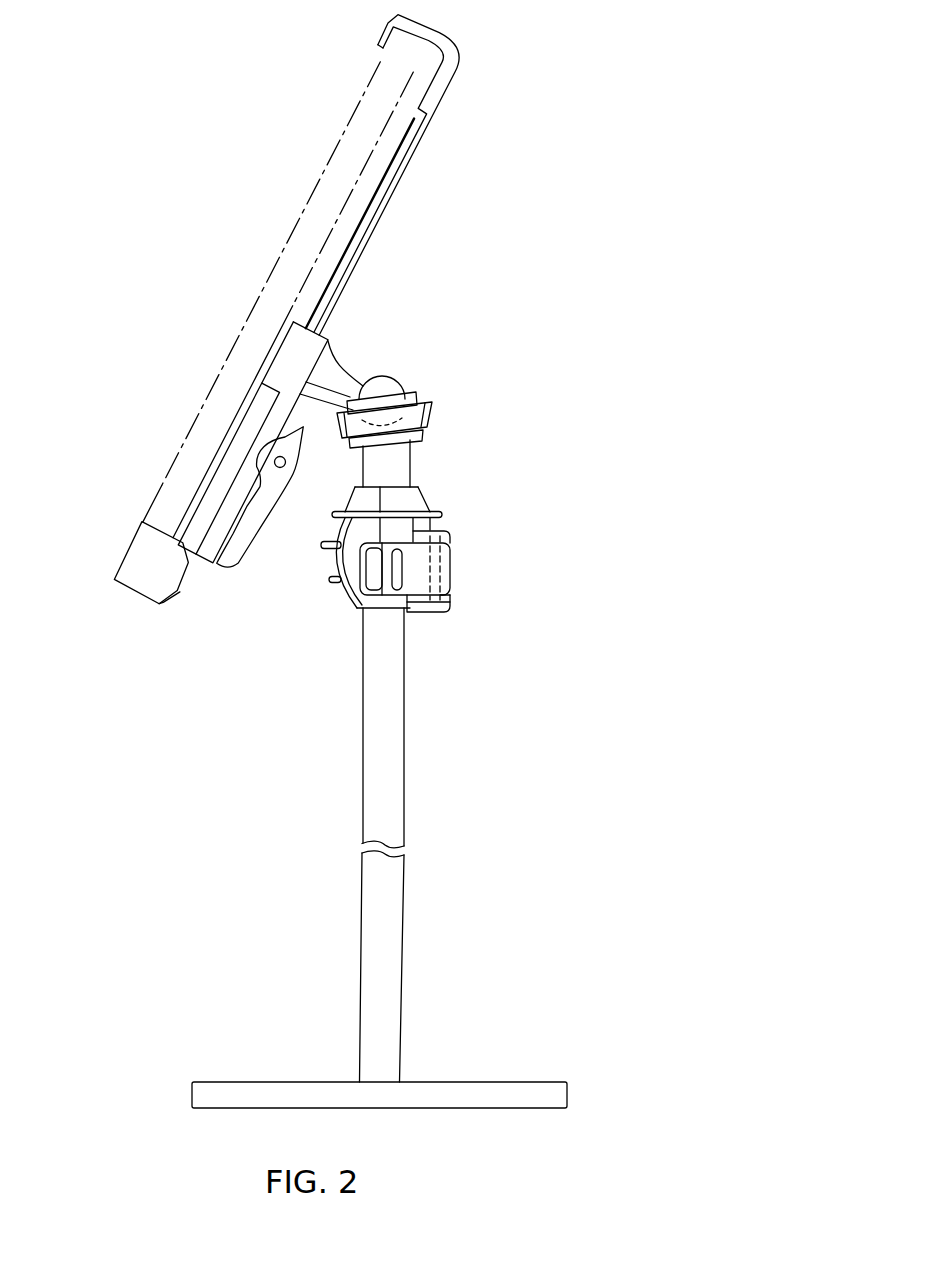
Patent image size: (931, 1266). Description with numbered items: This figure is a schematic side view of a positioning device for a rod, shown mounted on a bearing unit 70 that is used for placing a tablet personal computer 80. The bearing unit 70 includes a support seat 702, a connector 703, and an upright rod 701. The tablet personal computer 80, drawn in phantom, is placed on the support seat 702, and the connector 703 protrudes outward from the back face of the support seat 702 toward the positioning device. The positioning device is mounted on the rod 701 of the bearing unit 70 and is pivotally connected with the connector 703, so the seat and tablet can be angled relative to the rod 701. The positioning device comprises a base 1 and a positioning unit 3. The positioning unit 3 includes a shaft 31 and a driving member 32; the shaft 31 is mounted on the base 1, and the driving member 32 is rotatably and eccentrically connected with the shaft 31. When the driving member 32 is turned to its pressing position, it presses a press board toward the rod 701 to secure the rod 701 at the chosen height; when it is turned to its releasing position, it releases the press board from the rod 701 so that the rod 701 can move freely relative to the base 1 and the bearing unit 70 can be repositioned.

The base 1 is at (419, 529).
The positioning unit 3 is at (419, 564).
The shaft 31 is at (452, 580).
The driving member 32 is at (373, 574).
The bearing unit 70 is at (341, 327).
The rod 701 is at (392, 741).
The support seat 702 is at (178, 568).
The connector 703 is at (390, 386).
The tablet personal computer 80 is at (273, 290).